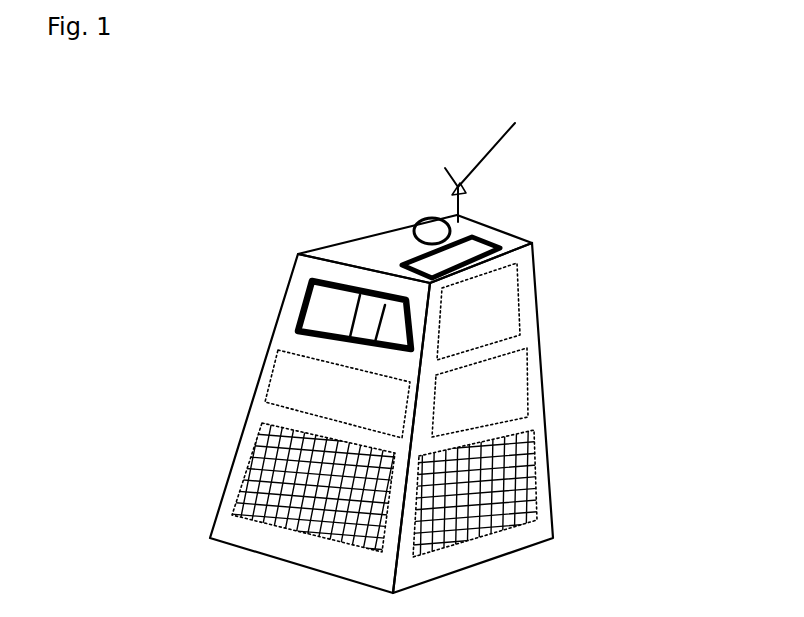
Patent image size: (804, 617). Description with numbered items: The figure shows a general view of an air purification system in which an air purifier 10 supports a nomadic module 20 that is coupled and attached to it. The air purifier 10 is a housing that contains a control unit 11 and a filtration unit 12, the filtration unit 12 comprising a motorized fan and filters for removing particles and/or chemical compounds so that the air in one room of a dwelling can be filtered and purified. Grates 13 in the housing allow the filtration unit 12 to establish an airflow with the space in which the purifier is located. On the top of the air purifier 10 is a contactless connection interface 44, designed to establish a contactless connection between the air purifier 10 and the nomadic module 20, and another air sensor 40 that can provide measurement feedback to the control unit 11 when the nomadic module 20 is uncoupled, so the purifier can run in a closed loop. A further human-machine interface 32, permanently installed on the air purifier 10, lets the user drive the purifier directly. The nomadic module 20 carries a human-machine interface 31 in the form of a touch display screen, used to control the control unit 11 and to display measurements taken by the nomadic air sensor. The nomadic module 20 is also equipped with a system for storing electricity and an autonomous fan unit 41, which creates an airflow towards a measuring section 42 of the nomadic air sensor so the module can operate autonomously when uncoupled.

The air purifier 10 is at (330, 370).
The control unit 11 is at (553, 299).
The filtration unit 12 is at (555, 384).
The grates 13 is at (458, 494).
The nomadic module 20 is at (246, 294).
The human-machine interface 31 is at (269, 391).
The human-machine interface 32 is at (502, 211).
The air sensor 40 is at (425, 218).
The autonomous fan unit 41 is at (358, 318).
The measuring section 42 is at (375, 315).
The contactless connection interface 44 is at (491, 148).